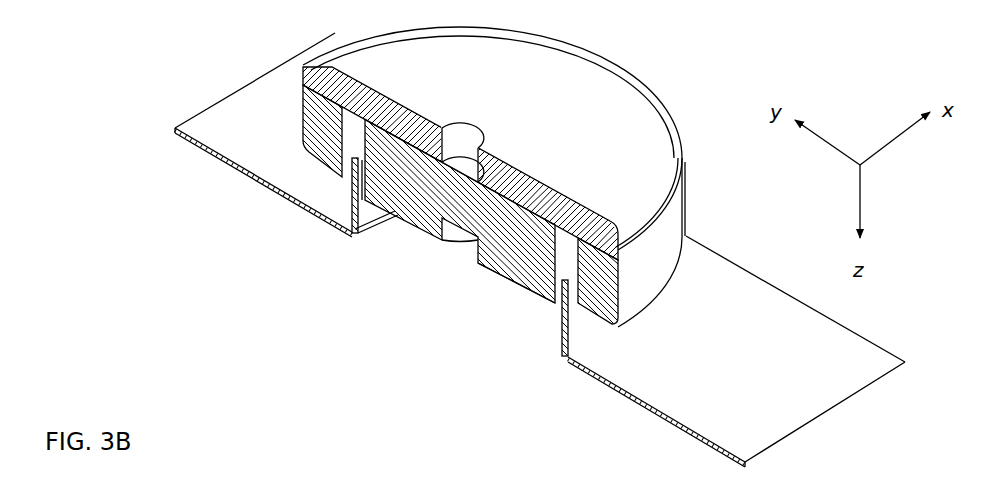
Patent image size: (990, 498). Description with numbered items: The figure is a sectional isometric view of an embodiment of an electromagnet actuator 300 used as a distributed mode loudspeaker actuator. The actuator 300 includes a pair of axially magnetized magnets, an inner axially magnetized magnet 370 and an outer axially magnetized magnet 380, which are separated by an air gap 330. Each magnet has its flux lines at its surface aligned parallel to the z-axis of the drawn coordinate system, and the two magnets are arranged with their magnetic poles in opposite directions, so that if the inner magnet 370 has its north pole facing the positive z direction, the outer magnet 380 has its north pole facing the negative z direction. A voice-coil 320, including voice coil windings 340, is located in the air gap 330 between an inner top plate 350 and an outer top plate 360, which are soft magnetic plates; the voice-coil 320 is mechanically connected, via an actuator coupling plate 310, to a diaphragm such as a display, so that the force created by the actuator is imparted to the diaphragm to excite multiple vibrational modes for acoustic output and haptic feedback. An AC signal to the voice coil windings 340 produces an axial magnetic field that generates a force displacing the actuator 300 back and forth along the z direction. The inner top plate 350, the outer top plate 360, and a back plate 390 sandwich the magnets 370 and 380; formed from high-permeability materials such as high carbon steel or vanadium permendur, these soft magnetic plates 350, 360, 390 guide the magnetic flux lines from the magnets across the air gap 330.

The electromagnet actuator 300 is at (84, 92).
The actuator coupling plate 310 is at (722, 405).
The voice-coil 320 is at (368, 213).
The air gap 330 is at (317, 160).
The voice coil windings 340 is at (350, 193).
The inner top plate 350 is at (495, 275).
The outer top plate 360 is at (568, 357).
The inner axially magnetized magnet 370 is at (510, 235).
The outer axially magnetized magnet 380 is at (640, 270).
The back plate 390 is at (572, 124).